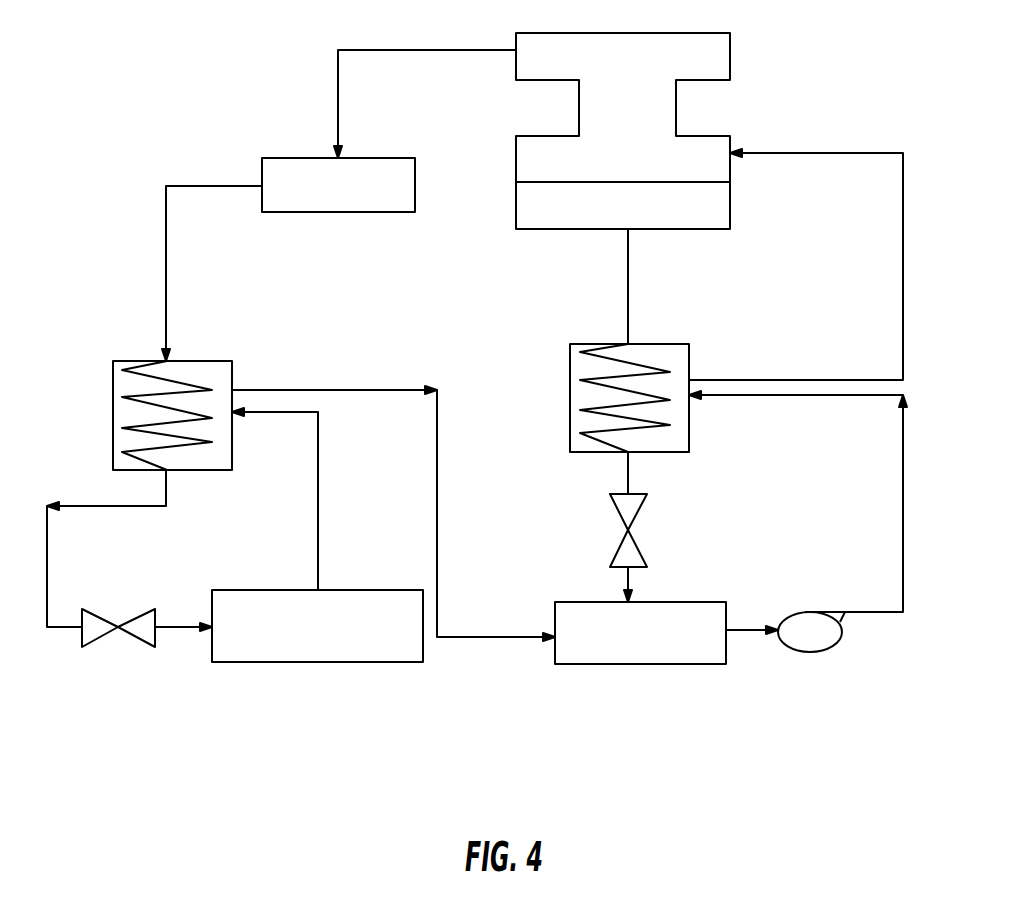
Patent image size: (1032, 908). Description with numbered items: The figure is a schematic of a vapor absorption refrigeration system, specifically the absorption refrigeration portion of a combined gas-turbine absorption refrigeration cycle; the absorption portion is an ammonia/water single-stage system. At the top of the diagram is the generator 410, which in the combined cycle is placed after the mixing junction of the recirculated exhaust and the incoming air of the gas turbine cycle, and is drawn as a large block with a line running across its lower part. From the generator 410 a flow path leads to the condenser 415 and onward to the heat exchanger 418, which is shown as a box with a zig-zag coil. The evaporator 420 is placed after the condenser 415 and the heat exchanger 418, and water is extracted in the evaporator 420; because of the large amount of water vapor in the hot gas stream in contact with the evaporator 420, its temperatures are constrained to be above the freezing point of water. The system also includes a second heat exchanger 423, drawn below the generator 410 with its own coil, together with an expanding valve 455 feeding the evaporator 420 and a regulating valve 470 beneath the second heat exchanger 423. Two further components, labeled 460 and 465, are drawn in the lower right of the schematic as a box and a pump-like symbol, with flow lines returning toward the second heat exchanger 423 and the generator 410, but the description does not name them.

The generator 410 is at (705, 136).
The condenser 415 is at (262, 167).
The heat exchanger 418 is at (203, 361).
The evaporator 420 is at (266, 662).
The second heat exchanger 423 is at (570, 357).
The expanding valve 455 is at (82, 640).
The receiver / accumulator 460 is at (636, 664).
The pump 465 is at (835, 640).
The regulating valve 470 is at (634, 538).